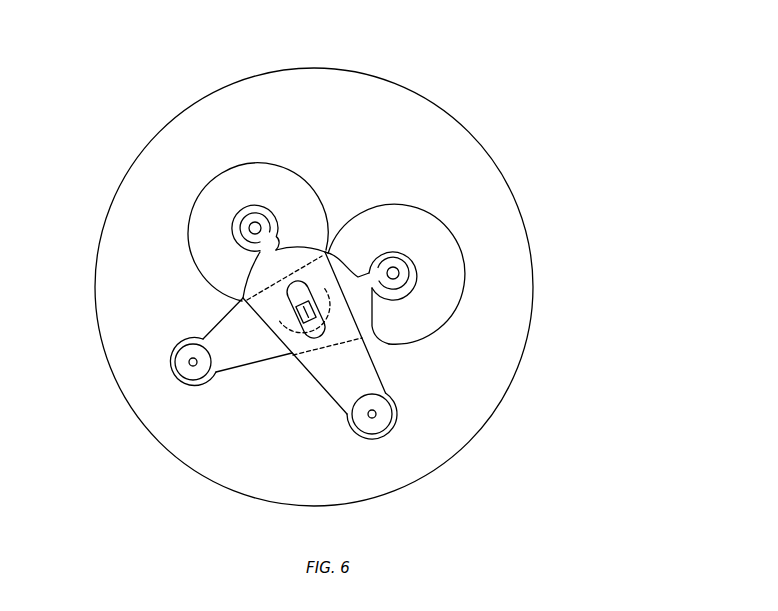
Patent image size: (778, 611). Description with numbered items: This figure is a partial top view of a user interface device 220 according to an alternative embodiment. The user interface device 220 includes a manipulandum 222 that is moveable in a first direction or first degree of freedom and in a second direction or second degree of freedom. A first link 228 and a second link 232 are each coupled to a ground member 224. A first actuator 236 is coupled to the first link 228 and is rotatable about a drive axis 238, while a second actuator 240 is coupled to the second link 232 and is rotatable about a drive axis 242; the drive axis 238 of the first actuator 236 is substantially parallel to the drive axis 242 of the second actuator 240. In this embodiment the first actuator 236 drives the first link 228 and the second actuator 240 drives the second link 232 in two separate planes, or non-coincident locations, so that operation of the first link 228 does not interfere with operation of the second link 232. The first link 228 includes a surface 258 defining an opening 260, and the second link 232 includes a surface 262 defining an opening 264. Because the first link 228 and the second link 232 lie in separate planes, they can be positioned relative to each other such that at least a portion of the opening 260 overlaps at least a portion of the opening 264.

The user interface device 220 is at (608, 159).
The manipulandum 222 is at (283, 318).
The ground member 224 is at (528, 290).
The first link 228 is at (327, 397).
The second link 232 is at (232, 377).
The first actuator 236 is at (223, 188).
The drive axis 238 is at (249, 228).
The second actuator 240 is at (420, 223).
The drive axis 242 is at (400, 273).
The surface 258 is at (300, 257).
The opening 260 is at (326, 252).
The surface 262 is at (268, 353).
The opening 264 is at (285, 325).